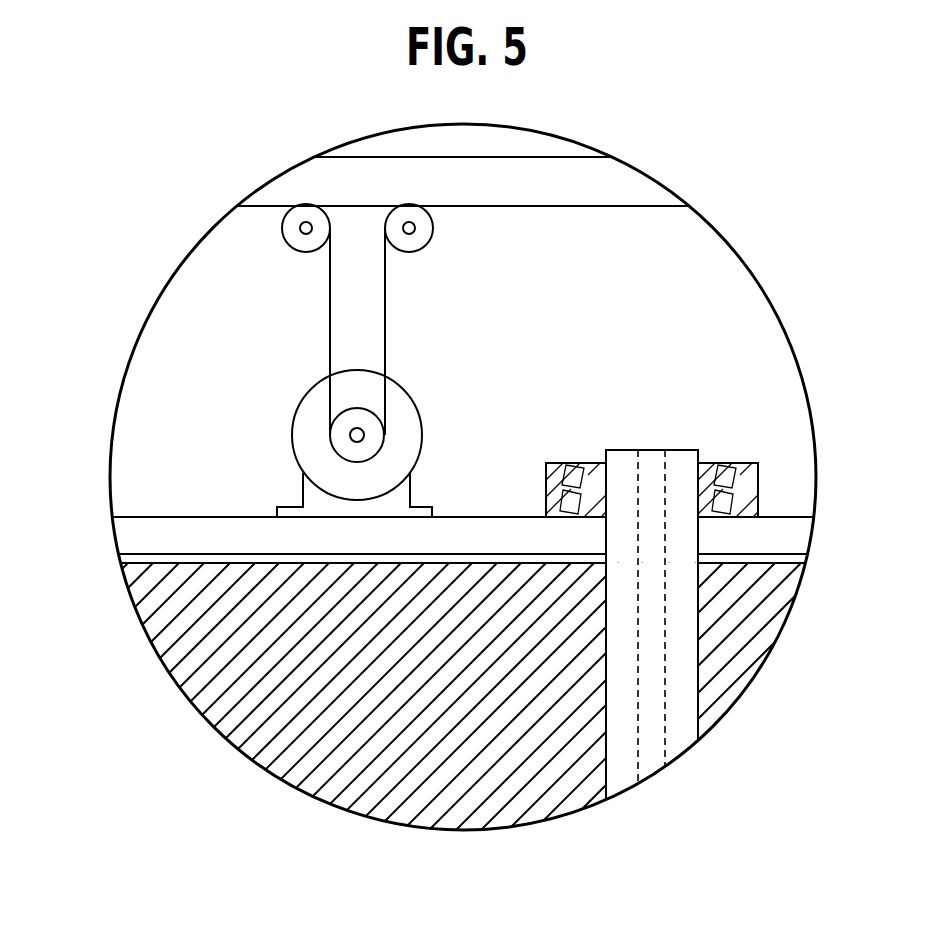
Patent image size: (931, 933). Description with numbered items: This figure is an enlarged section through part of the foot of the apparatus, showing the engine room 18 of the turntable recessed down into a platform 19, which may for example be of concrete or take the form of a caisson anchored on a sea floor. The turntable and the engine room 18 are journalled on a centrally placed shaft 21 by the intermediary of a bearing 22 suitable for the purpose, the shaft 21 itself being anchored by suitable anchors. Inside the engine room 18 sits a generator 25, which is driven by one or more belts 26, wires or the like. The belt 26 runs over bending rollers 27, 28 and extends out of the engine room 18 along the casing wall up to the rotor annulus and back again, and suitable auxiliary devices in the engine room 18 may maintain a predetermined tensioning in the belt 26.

The engine room 18 is at (162, 440).
The platform 19 is at (413, 745).
The shaft 21 is at (682, 659).
The bearing 22 is at (746, 463).
The generator 25 is at (308, 452).
The belt 26 is at (330, 292).
The bending roller 27 is at (292, 216).
The bending roller 28 is at (404, 215).